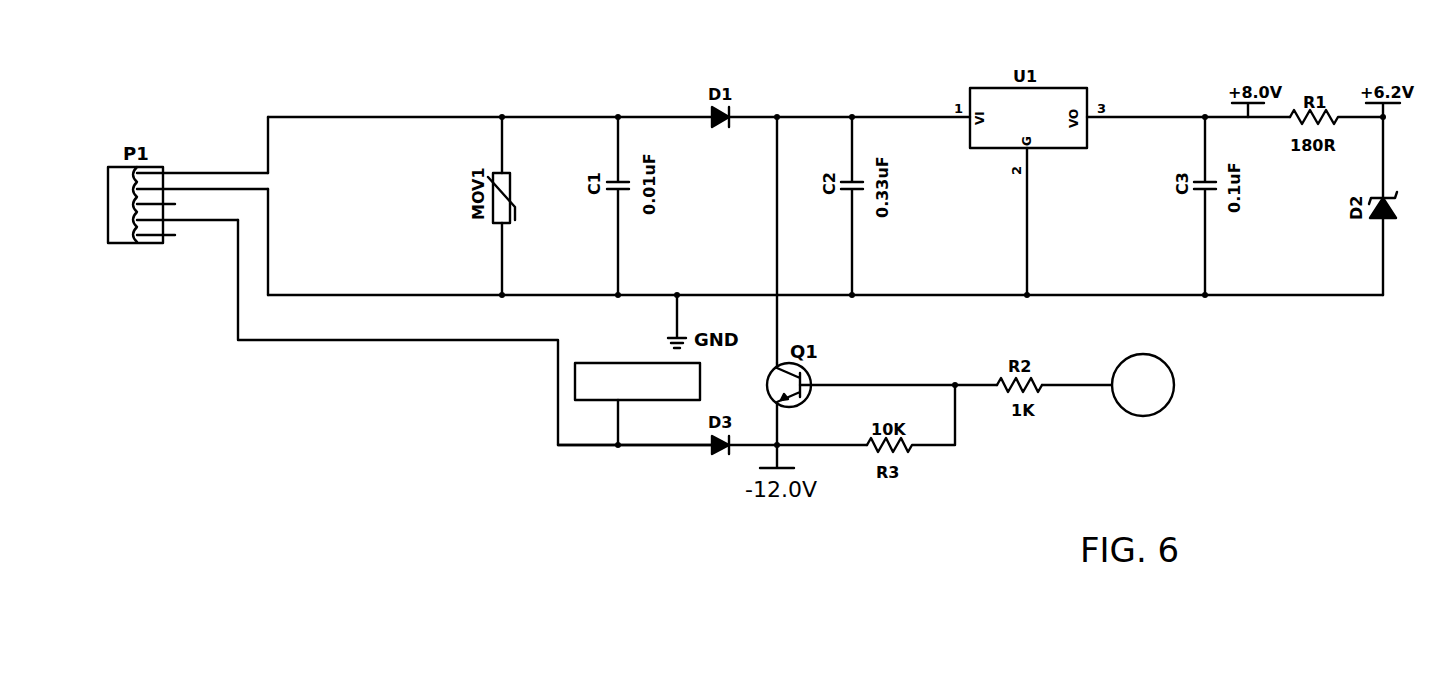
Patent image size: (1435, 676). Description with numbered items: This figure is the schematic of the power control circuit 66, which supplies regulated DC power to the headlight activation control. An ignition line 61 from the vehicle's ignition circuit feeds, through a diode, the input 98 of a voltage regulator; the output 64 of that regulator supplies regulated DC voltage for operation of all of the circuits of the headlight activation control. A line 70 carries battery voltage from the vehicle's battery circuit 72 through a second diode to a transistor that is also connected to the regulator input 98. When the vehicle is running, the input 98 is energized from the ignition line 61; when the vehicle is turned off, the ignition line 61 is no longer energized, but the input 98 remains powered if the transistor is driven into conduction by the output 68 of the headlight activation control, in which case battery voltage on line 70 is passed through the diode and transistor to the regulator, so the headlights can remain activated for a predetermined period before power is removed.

The ignition line 61 is at (442, 116).
The input of voltage regulator U1 98 is at (818, 117).
The output of voltage regulator U1 64 is at (1143, 117).
The power control circuit 66 is at (736, 234).
The battery circuit 72 is at (575, 383).
The battery line 70 is at (640, 445).
The output of headlight activation control 68 is at (1062, 387).